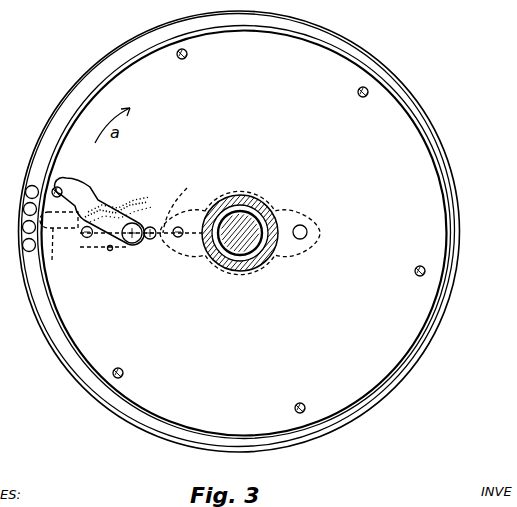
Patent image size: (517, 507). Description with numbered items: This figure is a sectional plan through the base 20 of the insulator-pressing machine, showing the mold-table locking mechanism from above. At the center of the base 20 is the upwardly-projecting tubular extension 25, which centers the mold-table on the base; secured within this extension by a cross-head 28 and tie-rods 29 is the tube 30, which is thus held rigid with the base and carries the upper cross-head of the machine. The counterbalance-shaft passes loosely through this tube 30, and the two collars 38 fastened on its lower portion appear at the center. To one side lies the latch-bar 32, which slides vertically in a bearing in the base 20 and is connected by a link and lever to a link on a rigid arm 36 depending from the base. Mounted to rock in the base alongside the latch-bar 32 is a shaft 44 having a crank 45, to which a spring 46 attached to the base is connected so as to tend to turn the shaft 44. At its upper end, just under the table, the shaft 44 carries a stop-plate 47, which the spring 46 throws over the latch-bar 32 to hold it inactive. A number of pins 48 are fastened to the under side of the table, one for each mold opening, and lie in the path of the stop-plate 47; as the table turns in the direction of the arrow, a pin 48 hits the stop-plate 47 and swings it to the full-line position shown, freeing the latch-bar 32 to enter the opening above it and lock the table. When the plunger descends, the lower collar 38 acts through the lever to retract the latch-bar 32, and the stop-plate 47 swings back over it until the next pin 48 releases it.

The base 20 is at (239, 231).
The tubular extension 25 is at (272, 218).
The cross-head 28 is at (285, 245).
The tie-rods 29 is at (181, 238).
The tube 30 is at (262, 204).
The latch-bar 32 is at (88, 239).
The rigid arm 36 is at (152, 240).
The collars 38 is at (244, 206).
The shaft 44 is at (130, 245).
The crank 45 is at (185, 202).
The spring 46 is at (150, 197).
The stop-plate 47 is at (85, 197).
The pins 48 is at (59, 187).